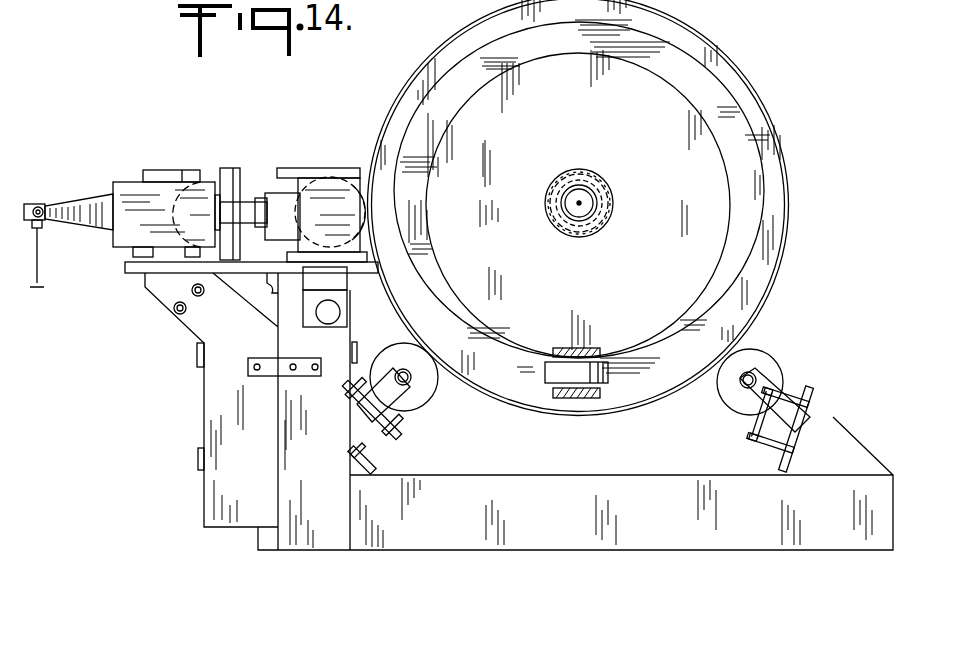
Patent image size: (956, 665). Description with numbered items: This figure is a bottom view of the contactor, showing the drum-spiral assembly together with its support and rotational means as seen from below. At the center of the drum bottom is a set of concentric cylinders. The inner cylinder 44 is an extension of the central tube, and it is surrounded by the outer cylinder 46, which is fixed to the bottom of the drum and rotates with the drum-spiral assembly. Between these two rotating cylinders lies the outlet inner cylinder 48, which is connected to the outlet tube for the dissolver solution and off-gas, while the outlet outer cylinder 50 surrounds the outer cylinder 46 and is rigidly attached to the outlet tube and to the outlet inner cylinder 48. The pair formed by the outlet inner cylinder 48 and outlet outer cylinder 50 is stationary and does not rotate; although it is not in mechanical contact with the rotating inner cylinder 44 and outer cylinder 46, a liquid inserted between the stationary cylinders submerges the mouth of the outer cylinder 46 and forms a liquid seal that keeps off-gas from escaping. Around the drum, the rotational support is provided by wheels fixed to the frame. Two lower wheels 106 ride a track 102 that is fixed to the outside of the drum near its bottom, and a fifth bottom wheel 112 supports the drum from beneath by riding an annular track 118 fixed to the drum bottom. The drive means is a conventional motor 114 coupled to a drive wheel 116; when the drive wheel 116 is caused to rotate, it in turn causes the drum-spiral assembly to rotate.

The track 102 is at (789, 241).
The inner cylinder 44 is at (578, 195).
The outer cylinder 46 is at (606, 210).
The outlet inner cylinder 48 is at (597, 192).
The outlet outer cylinder 50 is at (583, 238).
The lower wheels 106 is at (420, 398).
The bottom wheel 112 is at (610, 361).
The motor 114 is at (147, 197).
The drive wheel 116 is at (333, 168).
The annular track 118 is at (662, 343).